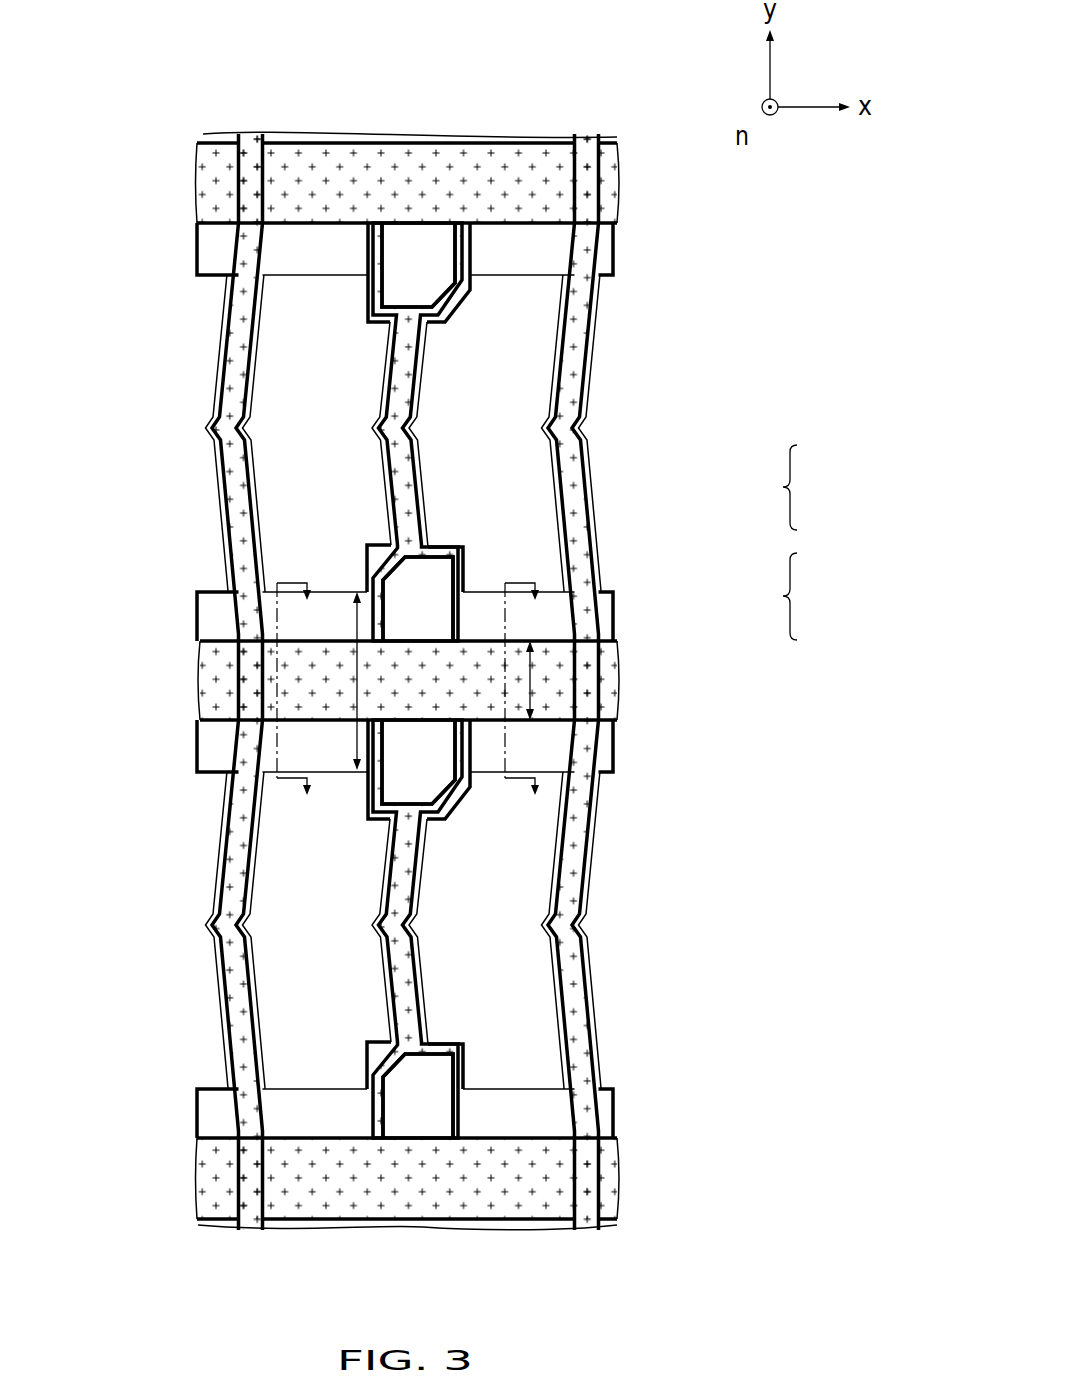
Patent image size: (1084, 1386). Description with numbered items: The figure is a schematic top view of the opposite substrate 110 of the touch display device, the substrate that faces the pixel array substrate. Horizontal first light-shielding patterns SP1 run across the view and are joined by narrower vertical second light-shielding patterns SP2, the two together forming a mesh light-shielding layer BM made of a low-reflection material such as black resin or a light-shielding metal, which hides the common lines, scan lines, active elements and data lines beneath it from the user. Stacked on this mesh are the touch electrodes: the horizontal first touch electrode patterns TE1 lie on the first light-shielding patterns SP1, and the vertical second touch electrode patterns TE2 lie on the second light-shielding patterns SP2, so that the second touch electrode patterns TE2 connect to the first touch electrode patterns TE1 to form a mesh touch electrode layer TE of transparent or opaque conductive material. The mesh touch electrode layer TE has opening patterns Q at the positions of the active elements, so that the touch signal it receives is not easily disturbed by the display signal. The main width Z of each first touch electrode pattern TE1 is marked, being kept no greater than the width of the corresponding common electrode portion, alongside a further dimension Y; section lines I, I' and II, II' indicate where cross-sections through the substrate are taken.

The first touch electrode pattern TE1 is at (220, 184).
The second touch electrode pattern TE2 is at (222, 390).
The first light-shielding pattern SP1 is at (217, 252).
The second light-shielding pattern SP2 is at (216, 462).
The opening pattern Q is at (447, 256).
The dimension Y is at (348, 681).
The main width Z is at (538, 680).
The section line I is at (299, 680).
The section line I' is at (302, 797).
The section line II is at (530, 797).
The section line II' is at (531, 680).
The mesh light-shielding layer BM is at (793, 488).
The mesh touch electrode layer TE is at (794, 596).
The opposite substrate 110 is at (850, 1303).